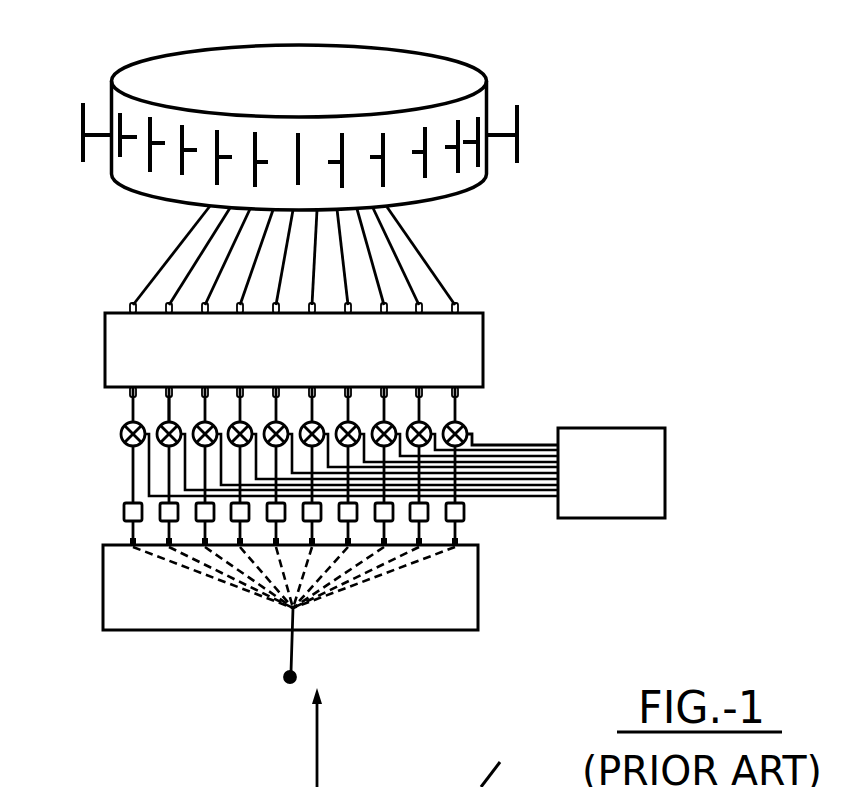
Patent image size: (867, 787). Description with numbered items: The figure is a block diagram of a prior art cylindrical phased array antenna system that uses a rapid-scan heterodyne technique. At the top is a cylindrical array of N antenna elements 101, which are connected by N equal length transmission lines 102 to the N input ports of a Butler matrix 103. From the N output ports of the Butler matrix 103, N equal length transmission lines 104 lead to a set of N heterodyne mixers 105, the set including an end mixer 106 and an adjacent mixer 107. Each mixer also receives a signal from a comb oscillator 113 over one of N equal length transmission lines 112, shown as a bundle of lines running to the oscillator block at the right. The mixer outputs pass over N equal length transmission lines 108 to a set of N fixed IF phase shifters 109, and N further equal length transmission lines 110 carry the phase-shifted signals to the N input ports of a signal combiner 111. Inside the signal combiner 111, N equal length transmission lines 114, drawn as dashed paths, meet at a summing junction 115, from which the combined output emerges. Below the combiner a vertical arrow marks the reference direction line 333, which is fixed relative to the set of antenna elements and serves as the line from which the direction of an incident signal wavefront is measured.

The antenna elements 101 is at (484, 72).
The transmission lines 102 is at (423, 260).
The Butler matrix 103 is at (483, 327).
The transmission lines 104 is at (457, 403).
The heterodyne mixers 105 is at (463, 430).
The end mixer 106 is at (121, 433).
The adjacent mixer 107 is at (160, 422).
The transmission lines 108 is at (130, 482).
The fixed IF phase shifters 109 is at (124, 510).
The transmission lines 110 is at (128, 540).
The signal combiner 111 is at (103, 587).
The transmission lines 112 is at (527, 498).
The comb oscillator 113 is at (640, 428).
The transmission lines 114 is at (240, 593).
The summing junction 115 is at (295, 612).
The reference direction line 333 is at (320, 714).